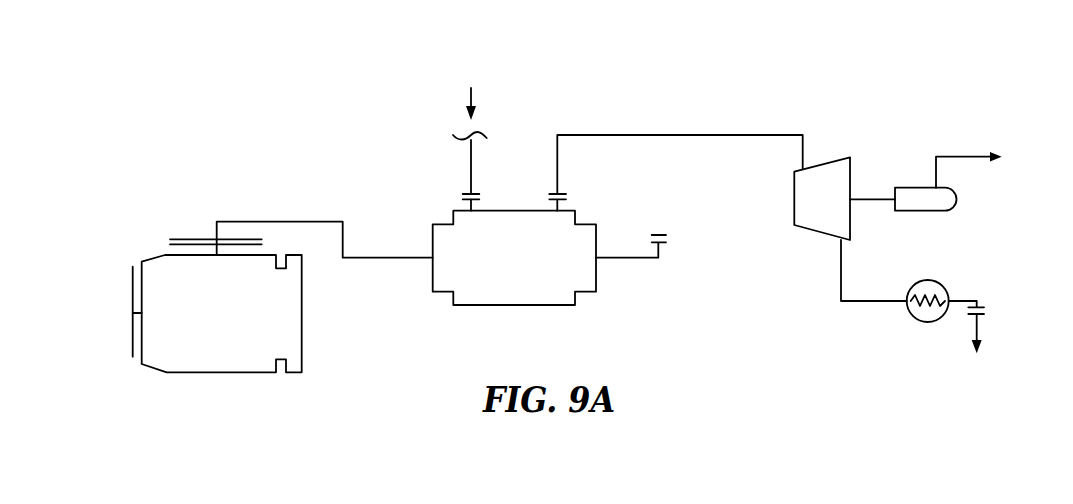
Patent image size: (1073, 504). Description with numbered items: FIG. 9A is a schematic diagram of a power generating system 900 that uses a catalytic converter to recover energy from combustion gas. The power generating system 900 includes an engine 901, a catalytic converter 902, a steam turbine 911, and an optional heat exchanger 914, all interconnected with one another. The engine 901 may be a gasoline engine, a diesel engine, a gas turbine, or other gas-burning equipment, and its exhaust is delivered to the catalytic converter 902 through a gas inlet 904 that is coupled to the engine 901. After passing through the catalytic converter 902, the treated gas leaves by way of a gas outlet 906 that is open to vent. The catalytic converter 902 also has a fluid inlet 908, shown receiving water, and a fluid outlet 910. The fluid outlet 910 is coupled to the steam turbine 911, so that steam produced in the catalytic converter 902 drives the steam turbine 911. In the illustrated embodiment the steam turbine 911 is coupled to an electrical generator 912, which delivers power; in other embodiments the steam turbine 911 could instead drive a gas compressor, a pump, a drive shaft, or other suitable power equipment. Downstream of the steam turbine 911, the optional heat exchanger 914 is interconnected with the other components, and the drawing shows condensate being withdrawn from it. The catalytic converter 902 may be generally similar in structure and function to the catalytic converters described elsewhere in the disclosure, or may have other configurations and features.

The power generating system 900 is at (843, 105).
The engine 901 is at (133, 267).
The catalytic converter 902 is at (570, 306).
The gas inlet 904 is at (433, 238).
The gas outlet 906 is at (596, 287).
The fluid inlet 908 is at (470, 188).
The fluid outlet 910 is at (560, 187).
The steam turbine 911 is at (794, 205).
The electrical generator 912 is at (957, 200).
The heat exchanger 914 is at (927, 280).